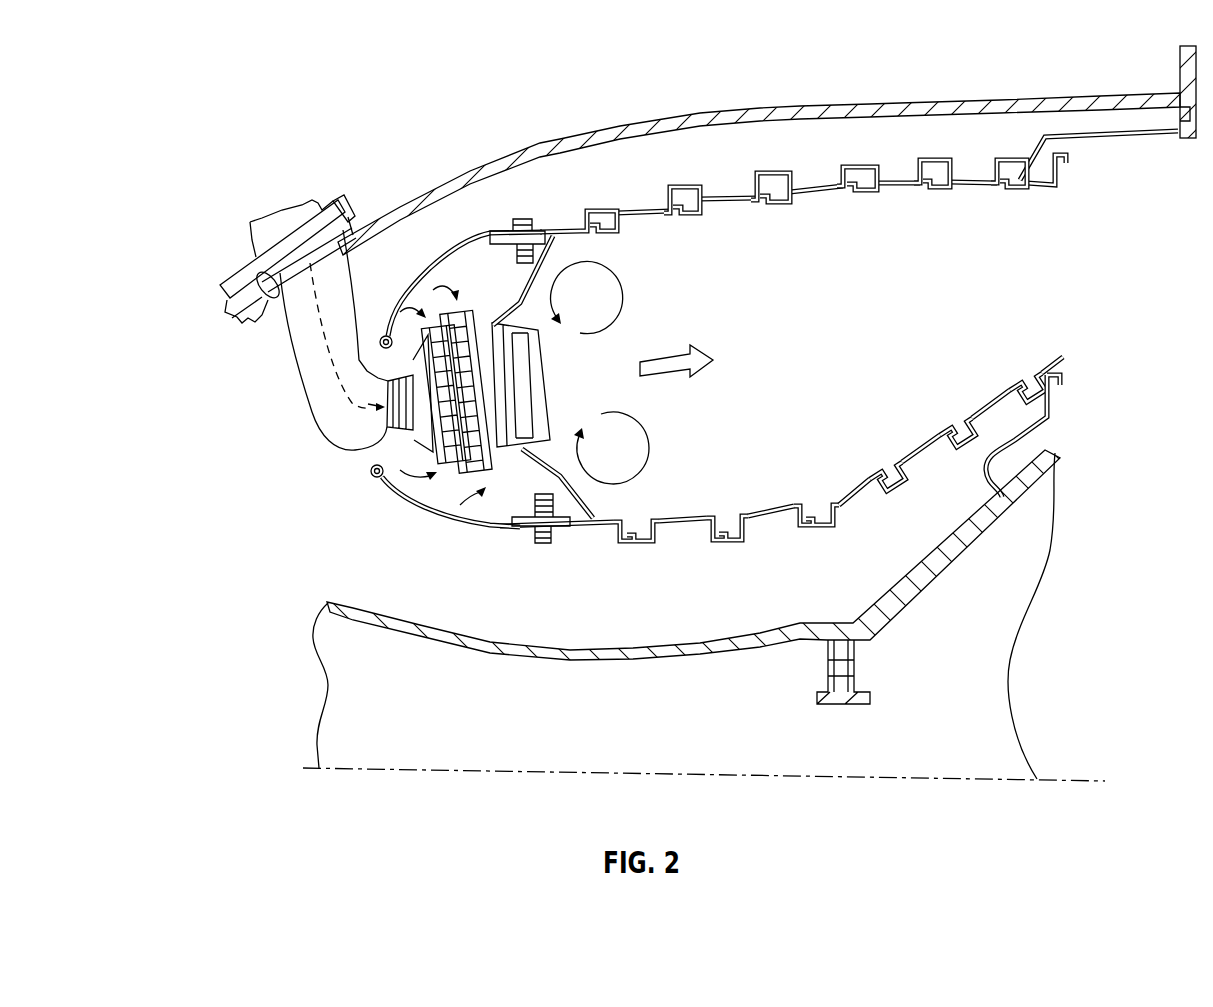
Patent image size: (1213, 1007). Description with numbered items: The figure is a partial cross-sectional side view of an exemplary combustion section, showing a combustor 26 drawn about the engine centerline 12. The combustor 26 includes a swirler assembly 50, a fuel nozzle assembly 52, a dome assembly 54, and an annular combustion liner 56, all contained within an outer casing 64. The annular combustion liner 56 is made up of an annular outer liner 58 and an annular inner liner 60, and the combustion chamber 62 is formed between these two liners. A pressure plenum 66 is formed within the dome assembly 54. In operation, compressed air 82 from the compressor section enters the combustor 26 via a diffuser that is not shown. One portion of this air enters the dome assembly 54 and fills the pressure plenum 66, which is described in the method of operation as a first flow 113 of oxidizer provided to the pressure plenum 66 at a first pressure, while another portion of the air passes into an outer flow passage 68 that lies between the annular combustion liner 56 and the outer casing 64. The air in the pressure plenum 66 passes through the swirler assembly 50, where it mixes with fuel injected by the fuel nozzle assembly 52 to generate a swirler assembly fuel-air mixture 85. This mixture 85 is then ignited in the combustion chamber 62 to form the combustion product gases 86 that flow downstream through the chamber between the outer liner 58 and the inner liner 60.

The engine central longitudinal axis 12 is at (835, 775).
The combustor 26 is at (962, 52).
The swirler assembly 50 is at (455, 490).
The fuel nozzle assembly 52 is at (298, 383).
The dome assembly 54 is at (433, 262).
The annular combustion liner 56 is at (640, 203).
The annular outer liner 58 is at (670, 232).
The annular inner liner 60 is at (793, 500).
The combustion chamber 62 is at (780, 341).
The outer casing 64 is at (767, 104).
The pressure plenum 66 is at (503, 274).
The outer flow passage 68 is at (910, 163).
The air 82 is at (206, 452).
The swirler assembly fuel-air mixture 85 is at (615, 328).
The combustion product gases 86 is at (683, 377).
The first flow of oxidizer 113 is at (355, 480).